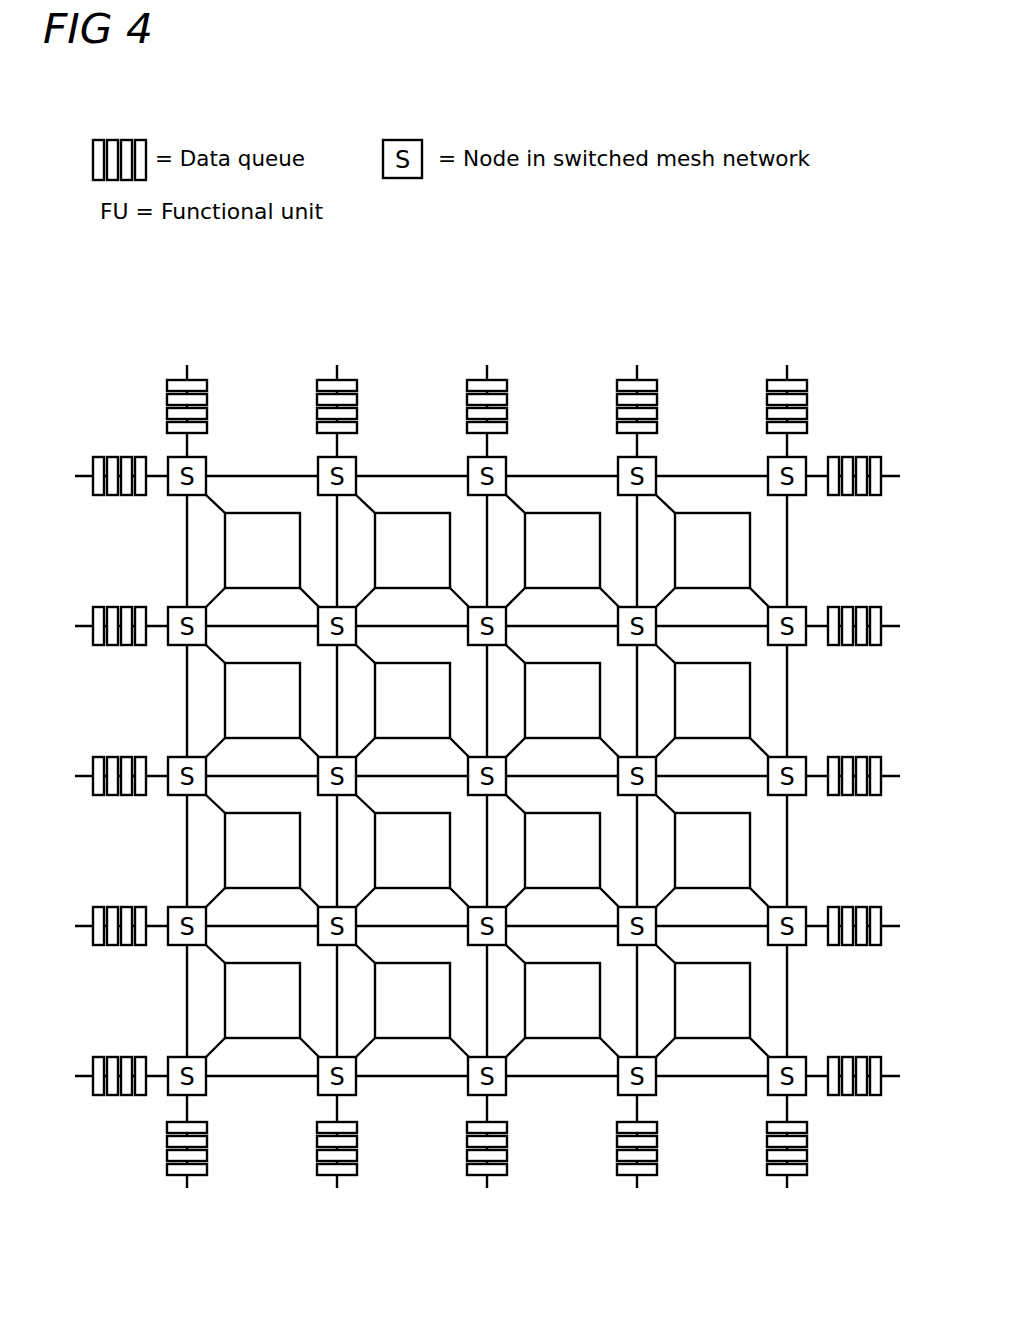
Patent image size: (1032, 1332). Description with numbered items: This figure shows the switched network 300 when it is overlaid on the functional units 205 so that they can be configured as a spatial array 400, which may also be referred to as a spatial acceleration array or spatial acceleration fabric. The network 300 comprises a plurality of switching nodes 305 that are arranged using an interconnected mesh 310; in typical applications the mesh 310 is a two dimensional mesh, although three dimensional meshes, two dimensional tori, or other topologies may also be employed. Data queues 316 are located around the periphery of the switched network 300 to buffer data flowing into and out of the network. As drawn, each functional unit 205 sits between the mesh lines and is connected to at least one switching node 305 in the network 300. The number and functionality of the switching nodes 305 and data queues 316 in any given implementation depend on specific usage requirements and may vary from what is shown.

The spatial array 400 is at (506, 285).
The switched network 300 is at (744, 360).
The interconnected mesh 310 is at (412, 476).
The data queue 316 is at (508, 381).
The switching node 305 is at (206, 457).
The functional unit 205 is at (487, 775).